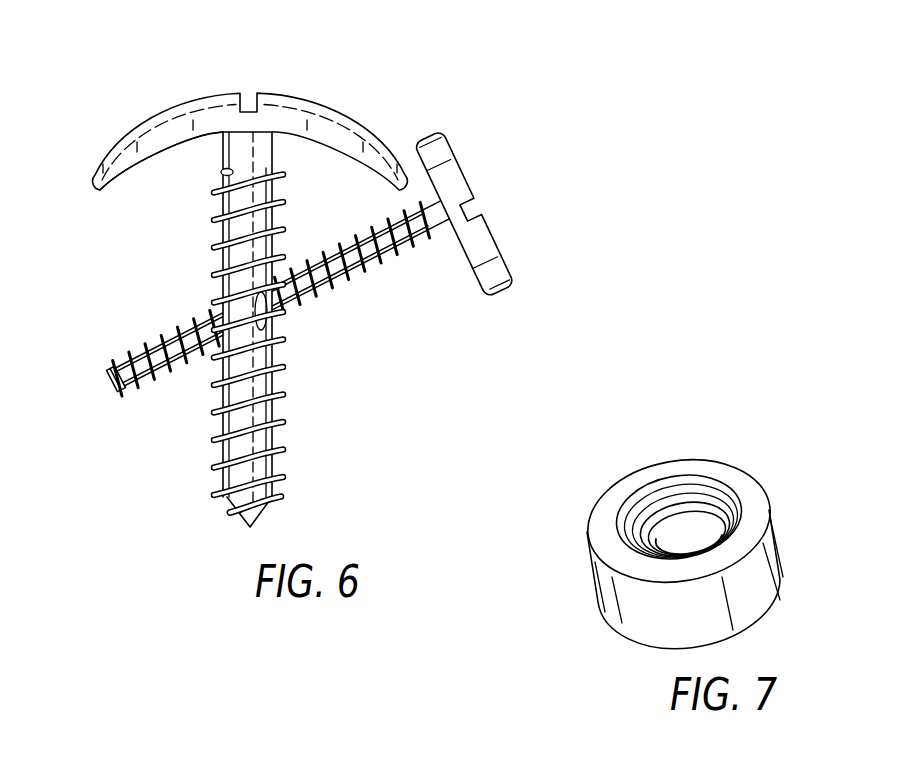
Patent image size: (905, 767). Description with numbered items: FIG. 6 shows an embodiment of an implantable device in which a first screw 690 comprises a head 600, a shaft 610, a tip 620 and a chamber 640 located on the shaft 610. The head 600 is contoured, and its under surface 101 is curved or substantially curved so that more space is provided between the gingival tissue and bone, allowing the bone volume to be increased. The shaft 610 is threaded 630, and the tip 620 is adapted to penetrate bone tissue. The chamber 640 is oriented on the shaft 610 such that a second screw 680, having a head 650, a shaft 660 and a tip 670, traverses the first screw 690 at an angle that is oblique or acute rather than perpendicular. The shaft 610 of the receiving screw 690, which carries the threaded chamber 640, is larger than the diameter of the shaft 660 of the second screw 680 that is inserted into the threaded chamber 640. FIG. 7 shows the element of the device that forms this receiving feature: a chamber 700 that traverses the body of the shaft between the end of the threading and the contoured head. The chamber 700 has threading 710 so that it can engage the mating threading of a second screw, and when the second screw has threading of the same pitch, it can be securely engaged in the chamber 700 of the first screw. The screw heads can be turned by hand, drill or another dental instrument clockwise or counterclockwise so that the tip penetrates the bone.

In FIG. 6, the head 600 is at (344, 79).
In FIG. 6, the first screw 690 is at (209, 81).
In FIG. 6, the under surface 101 is at (122, 176).
In FIG. 6, the shaft 610 is at (284, 204).
In FIG. 6, the tip 620 is at (263, 531).
In FIG. 6, the threading 630 is at (203, 439).
In FIG. 6, the chamber 640 is at (205, 299).
In FIG. 6, the shaft 660 is at (341, 305).
In FIG. 6, the tip 670 is at (100, 385).
In FIG. 6, the second screw 680 is at (514, 225).
In FIG. 6, the head 650 is at (528, 297).
In FIG. 7, the chamber 700 is at (793, 483).
In FIG. 7, the threading 710 is at (714, 491).